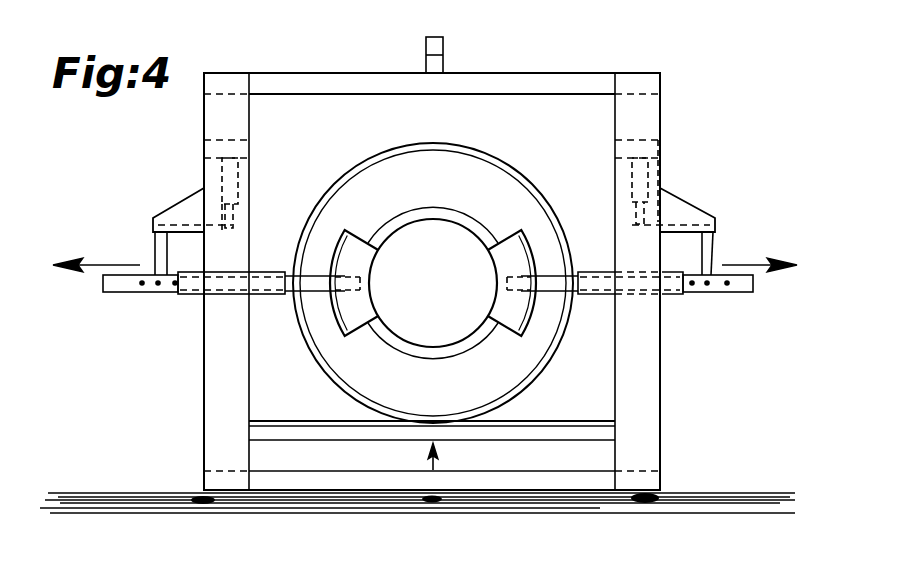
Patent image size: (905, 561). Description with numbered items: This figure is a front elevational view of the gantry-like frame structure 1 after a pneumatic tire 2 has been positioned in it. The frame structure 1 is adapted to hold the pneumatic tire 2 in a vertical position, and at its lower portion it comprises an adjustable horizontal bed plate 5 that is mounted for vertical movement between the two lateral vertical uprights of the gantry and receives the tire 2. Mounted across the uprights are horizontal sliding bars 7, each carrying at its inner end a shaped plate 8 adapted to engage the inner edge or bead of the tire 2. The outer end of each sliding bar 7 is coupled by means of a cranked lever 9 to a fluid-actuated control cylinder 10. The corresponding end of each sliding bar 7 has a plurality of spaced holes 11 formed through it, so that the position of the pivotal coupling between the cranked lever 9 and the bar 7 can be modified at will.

The gantry-like frame structure 1 is at (582, 72).
The pneumatic tire 2 is at (488, 177).
The adjustable horizontal bed plate 5 is at (284, 421).
The horizontal sliding bars 7 is at (313, 278).
The shaped plate 8 is at (367, 304).
The cranked lever 9 is at (158, 248).
The fluid-actuated control cylinder 10 is at (213, 183).
The spaced holes 11 is at (175, 286).